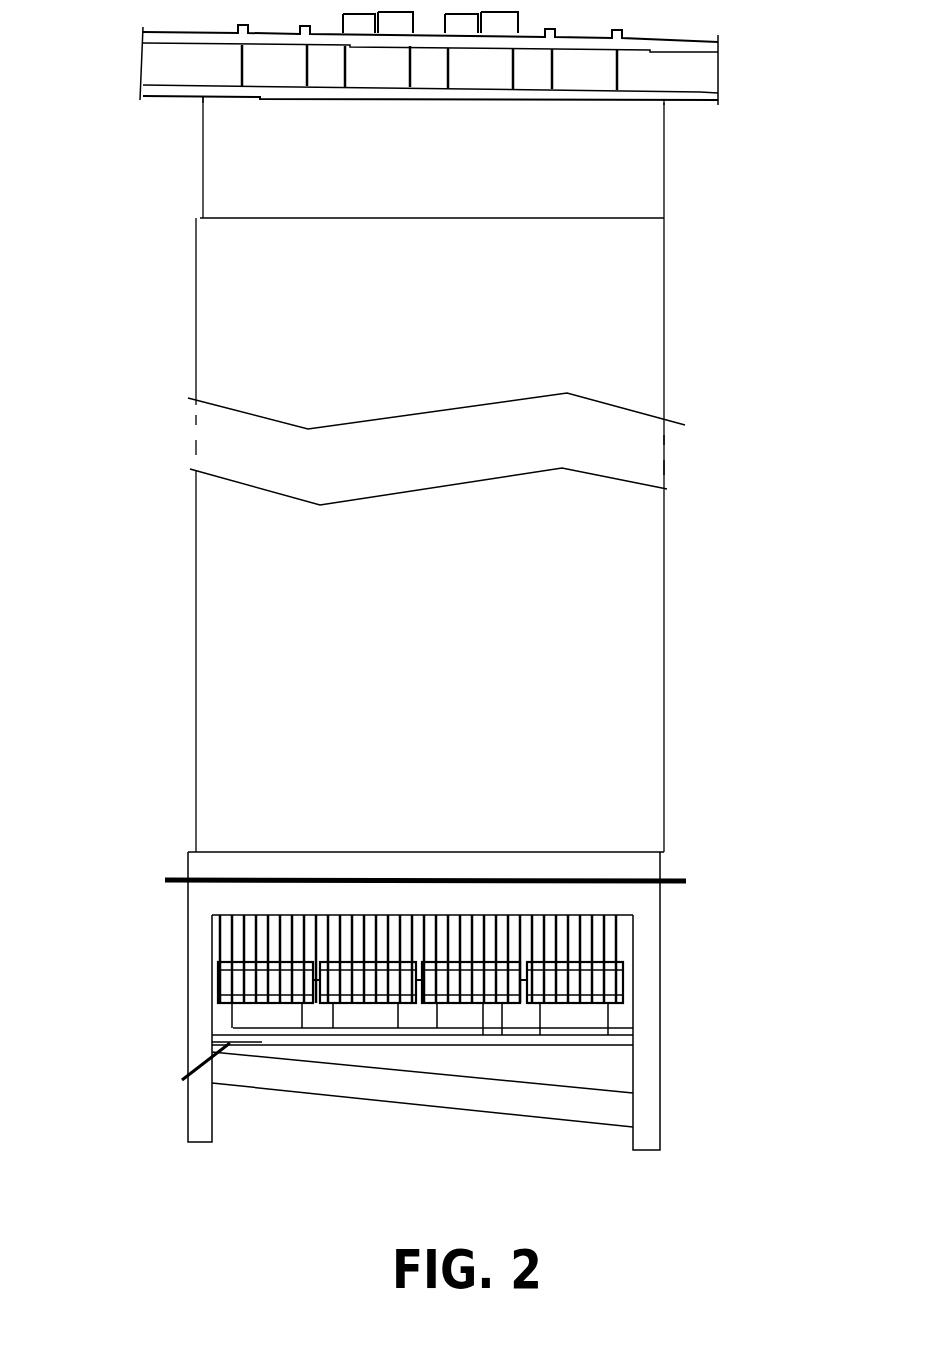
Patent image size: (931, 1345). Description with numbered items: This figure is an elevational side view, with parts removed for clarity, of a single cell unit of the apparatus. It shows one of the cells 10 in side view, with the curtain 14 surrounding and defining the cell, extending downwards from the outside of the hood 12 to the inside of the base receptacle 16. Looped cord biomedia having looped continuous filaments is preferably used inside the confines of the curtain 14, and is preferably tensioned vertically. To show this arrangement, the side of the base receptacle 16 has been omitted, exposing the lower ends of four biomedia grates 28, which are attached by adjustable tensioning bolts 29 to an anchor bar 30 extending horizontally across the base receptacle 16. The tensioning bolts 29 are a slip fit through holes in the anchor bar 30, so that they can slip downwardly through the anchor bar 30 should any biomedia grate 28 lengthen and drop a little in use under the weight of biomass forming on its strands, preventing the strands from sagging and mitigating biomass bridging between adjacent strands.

The cell 10 is at (680, 378).
The hood 12 is at (203, 149).
The curtain 14 is at (635, 642).
The base receptacle 16 is at (648, 990).
The biomedia grate 28 is at (282, 1003).
The adjustable tensioning bolt 29 is at (230, 1011).
The anchor bar 30 is at (220, 1035).